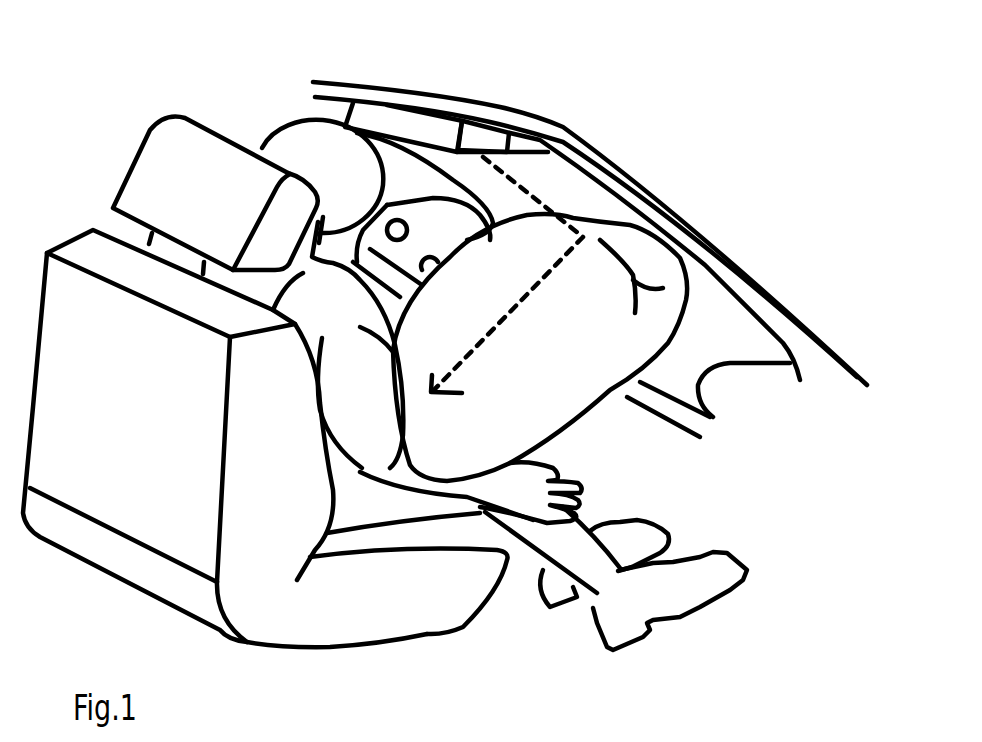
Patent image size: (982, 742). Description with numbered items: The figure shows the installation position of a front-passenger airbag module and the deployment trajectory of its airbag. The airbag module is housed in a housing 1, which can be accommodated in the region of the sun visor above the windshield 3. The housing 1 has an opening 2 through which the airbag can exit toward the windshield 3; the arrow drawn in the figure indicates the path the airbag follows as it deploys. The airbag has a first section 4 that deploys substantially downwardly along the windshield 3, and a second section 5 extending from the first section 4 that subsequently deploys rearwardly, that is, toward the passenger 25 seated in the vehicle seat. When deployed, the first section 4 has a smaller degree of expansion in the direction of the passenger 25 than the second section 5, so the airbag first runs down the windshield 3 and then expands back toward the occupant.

The housing 1 is at (462, 148).
The opening 2 is at (557, 137).
The windshield 3 is at (717, 240).
The first section 4 is at (503, 190).
The second section 5 is at (565, 348).
The passenger 25 is at (363, 390).